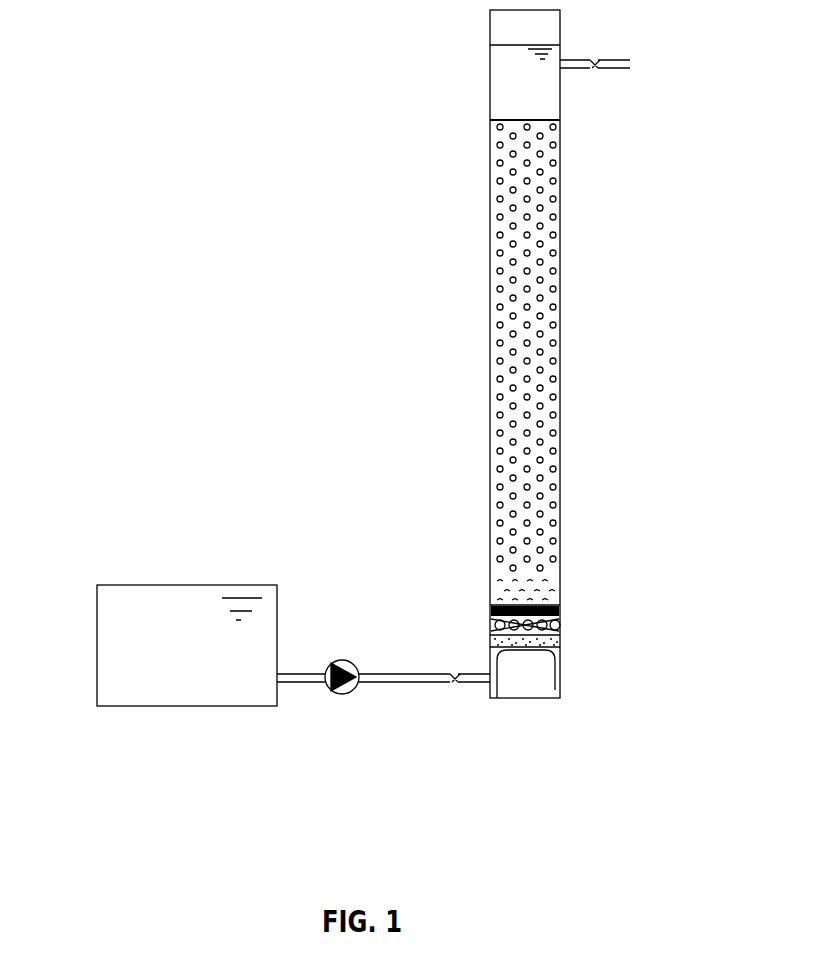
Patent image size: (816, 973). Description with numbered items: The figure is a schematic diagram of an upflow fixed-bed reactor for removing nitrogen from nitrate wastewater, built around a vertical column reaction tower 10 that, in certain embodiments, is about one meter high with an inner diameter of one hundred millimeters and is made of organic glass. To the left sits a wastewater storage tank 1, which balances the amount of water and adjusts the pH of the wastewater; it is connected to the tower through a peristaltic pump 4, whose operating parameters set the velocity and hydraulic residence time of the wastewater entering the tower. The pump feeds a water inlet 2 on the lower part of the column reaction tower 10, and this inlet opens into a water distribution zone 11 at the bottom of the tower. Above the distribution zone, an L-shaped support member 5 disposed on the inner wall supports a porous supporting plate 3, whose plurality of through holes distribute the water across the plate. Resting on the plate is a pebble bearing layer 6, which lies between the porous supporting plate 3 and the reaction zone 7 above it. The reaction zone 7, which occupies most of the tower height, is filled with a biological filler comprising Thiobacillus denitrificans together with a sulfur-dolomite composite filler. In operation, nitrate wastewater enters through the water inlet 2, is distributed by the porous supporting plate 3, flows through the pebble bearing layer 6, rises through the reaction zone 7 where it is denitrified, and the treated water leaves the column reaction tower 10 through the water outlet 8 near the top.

The wastewater storage tank 1 is at (97, 705).
The water inlet 2 is at (428, 680).
The porous supporting plate 3 is at (490, 635).
The peristaltic pump 4 is at (325, 690).
The L-shaped support member 5 is at (558, 657).
The pebble bearing layer 6 is at (560, 623).
The reaction zone 7 is at (559, 315).
The water outlet 8 is at (630, 60).
The column reaction tower 10 is at (476, 82).
The water distribution zone 11 is at (555, 688).